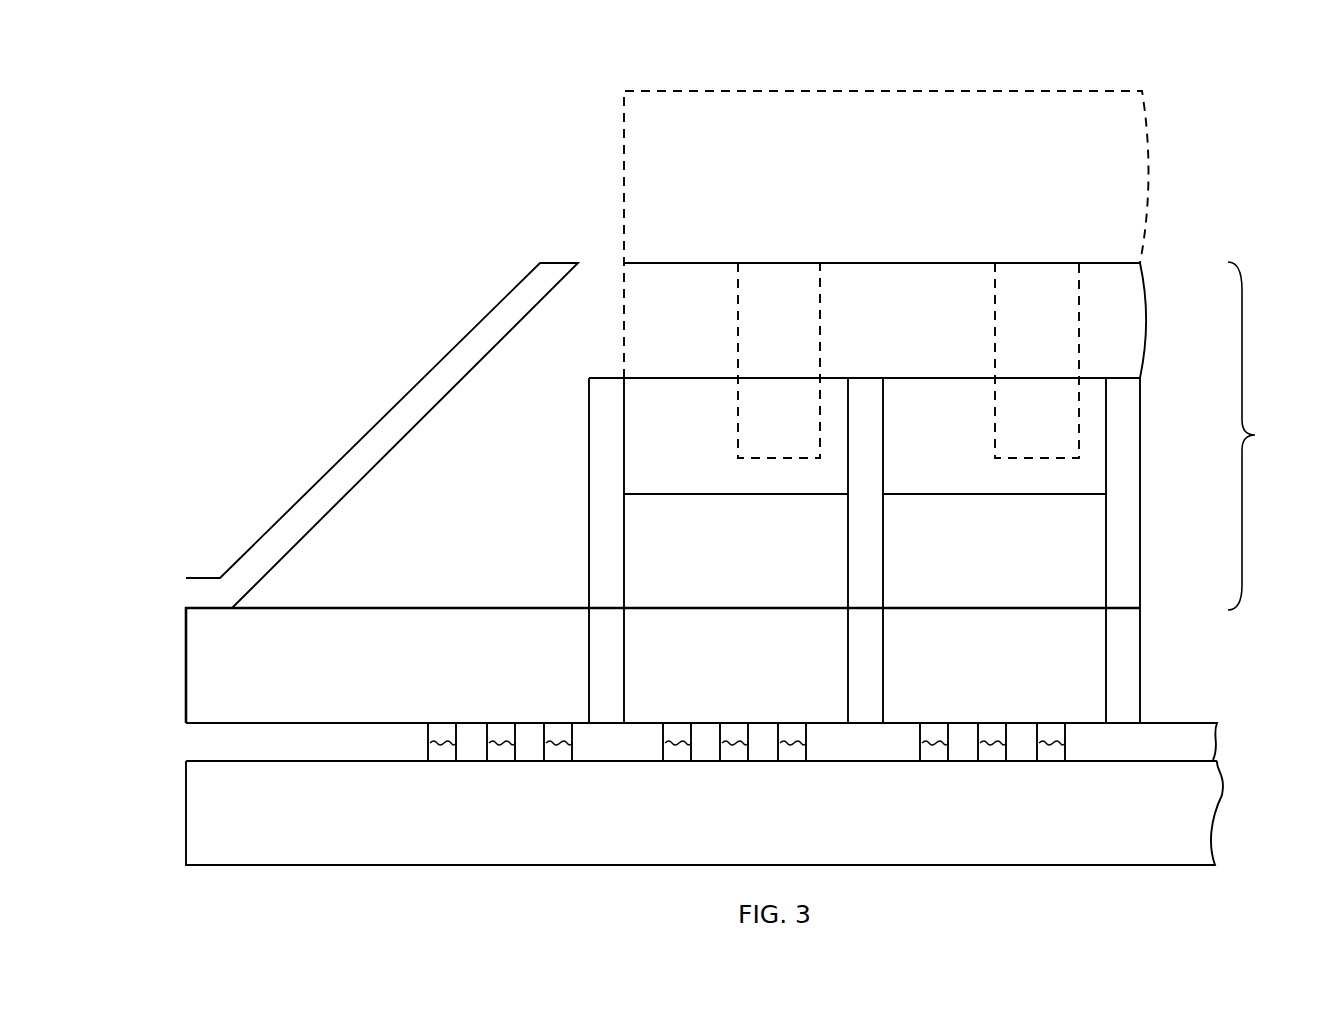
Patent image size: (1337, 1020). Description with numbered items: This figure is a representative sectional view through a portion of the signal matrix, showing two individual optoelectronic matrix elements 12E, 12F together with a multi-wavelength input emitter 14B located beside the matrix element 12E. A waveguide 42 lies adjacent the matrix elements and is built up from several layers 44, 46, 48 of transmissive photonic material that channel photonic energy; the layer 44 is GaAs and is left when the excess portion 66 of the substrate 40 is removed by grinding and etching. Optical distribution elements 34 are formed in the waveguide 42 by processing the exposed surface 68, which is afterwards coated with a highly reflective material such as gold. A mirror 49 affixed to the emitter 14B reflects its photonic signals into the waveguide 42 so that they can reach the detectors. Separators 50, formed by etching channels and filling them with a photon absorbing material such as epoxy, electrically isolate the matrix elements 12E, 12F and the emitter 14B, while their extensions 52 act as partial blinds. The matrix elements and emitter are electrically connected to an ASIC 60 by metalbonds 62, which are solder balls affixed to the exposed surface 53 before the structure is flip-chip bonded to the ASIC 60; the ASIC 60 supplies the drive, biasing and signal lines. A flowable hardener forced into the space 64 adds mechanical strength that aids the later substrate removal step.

The substrate 40 is at (683, 84).
The waveguide 42 is at (1258, 436).
The layer 44 is at (1120, 283).
The layer 46 is at (1093, 428).
The layer 48 is at (1088, 555).
The separators 50 is at (600, 625).
The extensions 52 is at (605, 385).
The mirror 49 is at (410, 403).
The optical distribution elements 34 is at (760, 276).
The excess portion 66 is at (900, 129).
The exposed surface 68 is at (645, 263).
The multi-wavelength emitter 14B is at (387, 643).
The optoelectronic matrix element 12E is at (736, 643).
The optoelectronic matrix element 12F is at (994, 643).
The metalbonds 62 is at (440, 756).
The exposed surface 53 is at (710, 724).
The space 64 is at (885, 750).
The ASIC 60 is at (1185, 800).